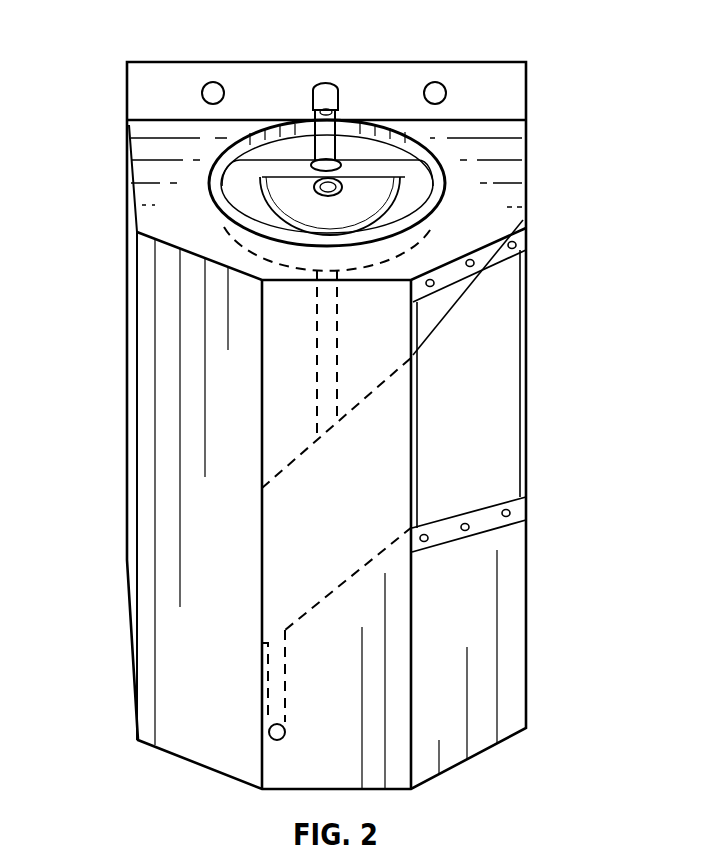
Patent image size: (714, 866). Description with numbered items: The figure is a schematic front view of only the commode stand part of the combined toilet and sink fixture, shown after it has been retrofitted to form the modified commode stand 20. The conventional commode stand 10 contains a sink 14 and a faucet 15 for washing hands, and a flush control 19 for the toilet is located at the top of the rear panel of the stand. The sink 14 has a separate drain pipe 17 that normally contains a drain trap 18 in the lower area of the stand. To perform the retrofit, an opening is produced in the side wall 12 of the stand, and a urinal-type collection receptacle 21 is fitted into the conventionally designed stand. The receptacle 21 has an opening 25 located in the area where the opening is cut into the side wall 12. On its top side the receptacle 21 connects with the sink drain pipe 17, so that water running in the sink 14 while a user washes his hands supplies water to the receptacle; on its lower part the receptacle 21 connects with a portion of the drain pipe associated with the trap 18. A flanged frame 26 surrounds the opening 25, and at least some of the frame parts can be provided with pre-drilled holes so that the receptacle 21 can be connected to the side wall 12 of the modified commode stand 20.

The commode stand 10 is at (113, 367).
The side wall 12 is at (483, 631).
The sink 14 is at (412, 188).
The faucet 15 is at (330, 140).
The drain pipe 17 is at (323, 332).
The drain trap 18 is at (276, 703).
The flush control 19 is at (211, 92).
The modified commode stand 20 is at (527, 360).
The urinal-type collection receptacle 21 is at (484, 418).
The opening 25 is at (487, 327).
The flanged frame 26 is at (527, 448).